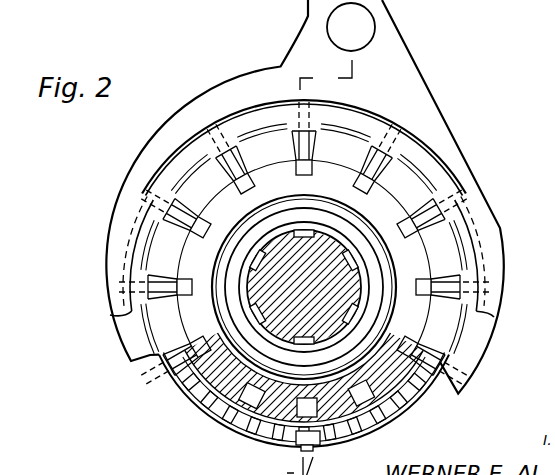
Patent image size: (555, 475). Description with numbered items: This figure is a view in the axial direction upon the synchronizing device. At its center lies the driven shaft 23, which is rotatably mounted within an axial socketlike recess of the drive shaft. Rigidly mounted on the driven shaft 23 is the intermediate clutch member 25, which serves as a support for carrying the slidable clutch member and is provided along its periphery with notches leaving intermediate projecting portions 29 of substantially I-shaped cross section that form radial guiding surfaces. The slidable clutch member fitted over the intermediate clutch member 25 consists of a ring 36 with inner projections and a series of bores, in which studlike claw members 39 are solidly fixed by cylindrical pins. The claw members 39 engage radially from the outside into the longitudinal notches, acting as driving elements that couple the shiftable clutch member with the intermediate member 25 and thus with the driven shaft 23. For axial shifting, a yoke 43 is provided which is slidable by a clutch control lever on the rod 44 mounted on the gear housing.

The driven shaft 23 is at (353, 264).
The intermediate clutch member 25 is at (198, 396).
The projecting portions 29 is at (267, 143).
The ring 36 is at (353, 115).
The studlike claw members 39 is at (367, 163).
The yoke 43 is at (418, 92).
The rod 44 is at (368, 24).